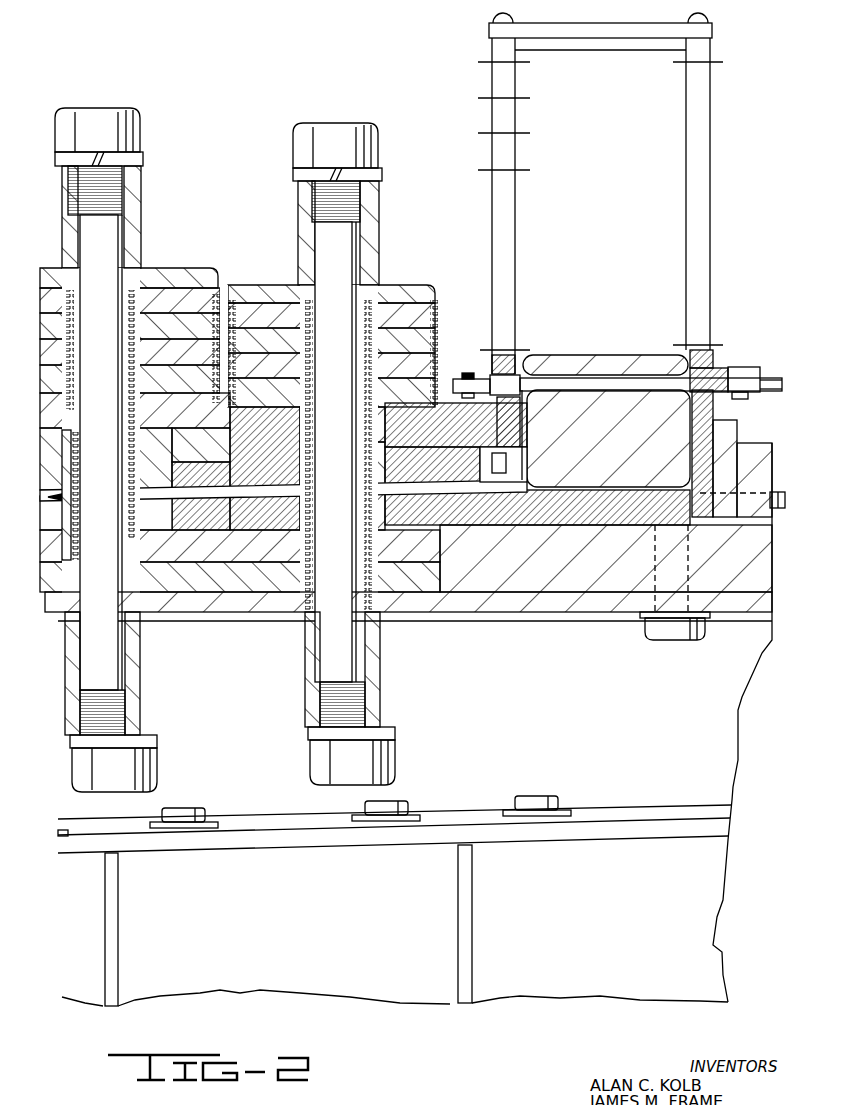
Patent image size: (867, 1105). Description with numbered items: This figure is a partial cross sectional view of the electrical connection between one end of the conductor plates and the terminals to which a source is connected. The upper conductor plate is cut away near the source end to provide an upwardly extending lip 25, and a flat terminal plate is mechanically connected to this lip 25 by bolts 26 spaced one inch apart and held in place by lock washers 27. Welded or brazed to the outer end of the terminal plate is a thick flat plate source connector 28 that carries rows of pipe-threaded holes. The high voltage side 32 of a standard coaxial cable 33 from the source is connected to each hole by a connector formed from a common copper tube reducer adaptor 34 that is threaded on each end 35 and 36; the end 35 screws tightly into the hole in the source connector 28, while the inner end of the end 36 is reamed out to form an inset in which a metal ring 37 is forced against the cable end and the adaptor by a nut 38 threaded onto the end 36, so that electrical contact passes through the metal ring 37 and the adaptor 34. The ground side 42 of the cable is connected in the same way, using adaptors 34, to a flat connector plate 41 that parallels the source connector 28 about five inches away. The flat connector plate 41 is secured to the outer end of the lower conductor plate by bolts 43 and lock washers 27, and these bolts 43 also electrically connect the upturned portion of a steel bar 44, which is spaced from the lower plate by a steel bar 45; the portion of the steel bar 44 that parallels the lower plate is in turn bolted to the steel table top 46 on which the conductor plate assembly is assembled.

The lip 25 is at (499, 476).
The bolts 26 is at (525, 460).
The lock washers 27 is at (142, 163).
The flat plate source connector 28 is at (514, 153).
The high voltage side 32 is at (481, 376).
The coaxial cable 33 is at (784, 389).
The copper tube reducer adaptor 34 is at (713, 362).
The end 35 is at (520, 404).
The end 36 is at (746, 399).
The metal ring 37 is at (464, 377).
The nut 38 is at (466, 398).
The flat connector plate 41 is at (704, 146).
The ground side 42 is at (758, 376).
The bolts 43 is at (782, 494).
The steel bar 44 is at (760, 478).
The steel bar 45 is at (724, 440).
The steel table top 46 is at (540, 612).